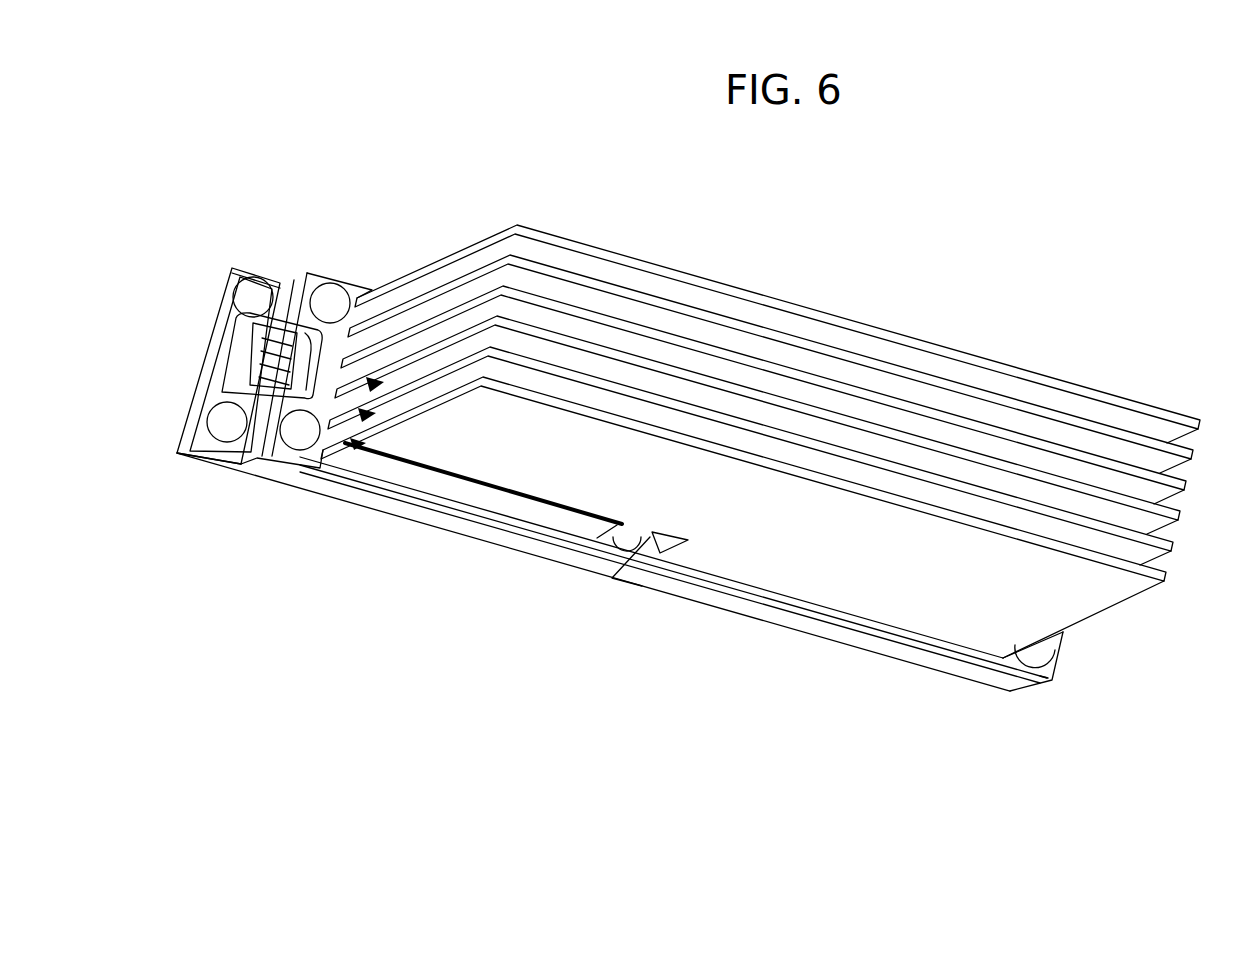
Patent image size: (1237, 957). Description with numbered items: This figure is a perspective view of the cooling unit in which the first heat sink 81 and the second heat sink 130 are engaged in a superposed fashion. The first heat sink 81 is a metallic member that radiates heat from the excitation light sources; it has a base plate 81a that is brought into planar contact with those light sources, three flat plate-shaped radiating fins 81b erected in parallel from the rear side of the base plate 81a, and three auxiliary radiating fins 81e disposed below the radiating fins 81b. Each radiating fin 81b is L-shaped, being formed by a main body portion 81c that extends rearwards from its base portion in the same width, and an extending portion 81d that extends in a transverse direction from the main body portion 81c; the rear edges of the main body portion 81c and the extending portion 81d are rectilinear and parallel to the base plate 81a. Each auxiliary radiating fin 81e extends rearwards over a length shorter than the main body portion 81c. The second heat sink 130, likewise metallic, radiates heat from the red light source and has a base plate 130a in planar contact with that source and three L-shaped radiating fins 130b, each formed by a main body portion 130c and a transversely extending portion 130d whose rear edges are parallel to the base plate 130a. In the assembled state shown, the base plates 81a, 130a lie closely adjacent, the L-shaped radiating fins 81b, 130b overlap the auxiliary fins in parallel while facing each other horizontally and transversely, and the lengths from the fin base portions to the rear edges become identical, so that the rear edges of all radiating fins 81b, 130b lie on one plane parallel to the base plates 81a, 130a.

The first heat sink 81 is at (340, 262).
The base plate 81a is at (320, 404).
The radiating fins 81b is at (886, 316).
The main body portion 81c is at (698, 302).
The extending portion 81d is at (1062, 378).
The auxiliary radiating fins 81e is at (463, 490).
The second heat sink 130 is at (1009, 700).
The base plate 130a is at (1060, 684).
The radiating fins 130b is at (712, 530).
The main body portion 130c is at (1084, 606).
The extending portion 130d is at (606, 490).